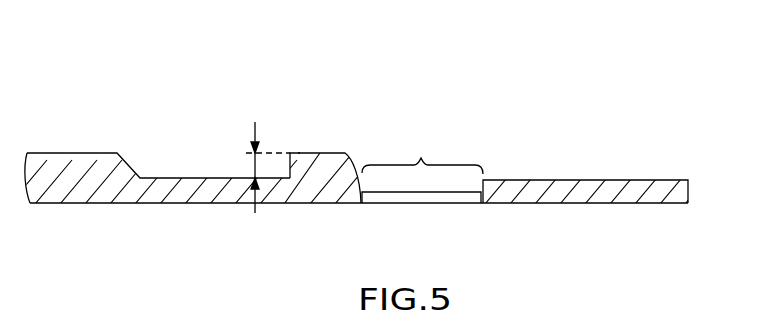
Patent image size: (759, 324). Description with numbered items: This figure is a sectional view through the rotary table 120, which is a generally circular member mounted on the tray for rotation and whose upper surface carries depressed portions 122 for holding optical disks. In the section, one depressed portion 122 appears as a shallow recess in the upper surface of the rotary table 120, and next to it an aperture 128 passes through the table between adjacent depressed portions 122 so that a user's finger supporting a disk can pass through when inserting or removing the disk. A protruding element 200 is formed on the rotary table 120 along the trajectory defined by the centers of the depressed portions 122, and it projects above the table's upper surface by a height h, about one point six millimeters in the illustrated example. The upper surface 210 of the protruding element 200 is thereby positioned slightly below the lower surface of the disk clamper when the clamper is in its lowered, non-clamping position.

The rotary table 120 is at (626, 97).
The upper surface 210 is at (312, 152).
The protruding element 200 is at (327, 157).
The aperture 128 is at (422, 152).
The depressed portion 122 is at (423, 191).
The step height h is at (263, 167).